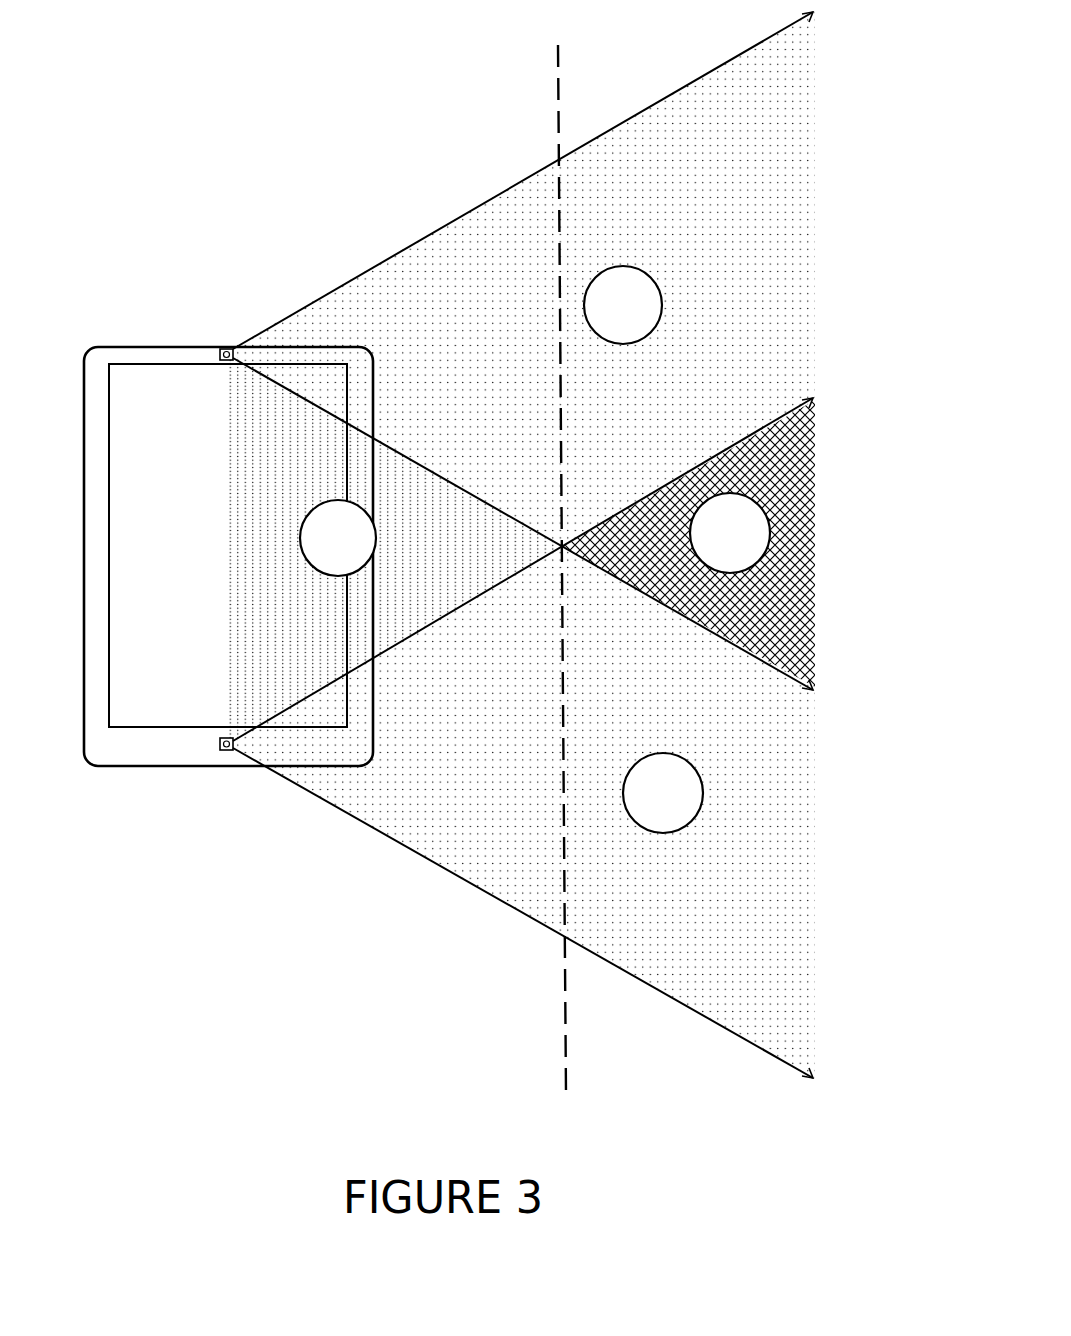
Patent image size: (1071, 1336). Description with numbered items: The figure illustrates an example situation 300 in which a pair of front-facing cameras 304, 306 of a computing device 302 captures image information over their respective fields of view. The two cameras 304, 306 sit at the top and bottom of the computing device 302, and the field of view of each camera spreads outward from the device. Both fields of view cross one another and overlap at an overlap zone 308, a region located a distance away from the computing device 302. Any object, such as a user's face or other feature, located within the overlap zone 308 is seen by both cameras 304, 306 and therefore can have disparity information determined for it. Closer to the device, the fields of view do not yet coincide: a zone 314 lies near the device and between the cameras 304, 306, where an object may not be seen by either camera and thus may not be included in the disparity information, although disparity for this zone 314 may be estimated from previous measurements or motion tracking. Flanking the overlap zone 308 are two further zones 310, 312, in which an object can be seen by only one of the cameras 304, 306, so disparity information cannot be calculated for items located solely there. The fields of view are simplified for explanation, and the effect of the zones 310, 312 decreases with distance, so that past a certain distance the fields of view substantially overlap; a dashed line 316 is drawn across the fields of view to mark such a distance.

The situation 300 is at (141, 137).
The computing device 302 is at (104, 345).
The front-facing camera 304 is at (220, 349).
The front-facing camera 306 is at (228, 752).
The overlap zone 308 is at (750, 545).
The zone 310 is at (643, 317).
The zone 312 is at (683, 805).
The zone 314 is at (358, 550).
The threshold distance line 316 is at (563, 994).